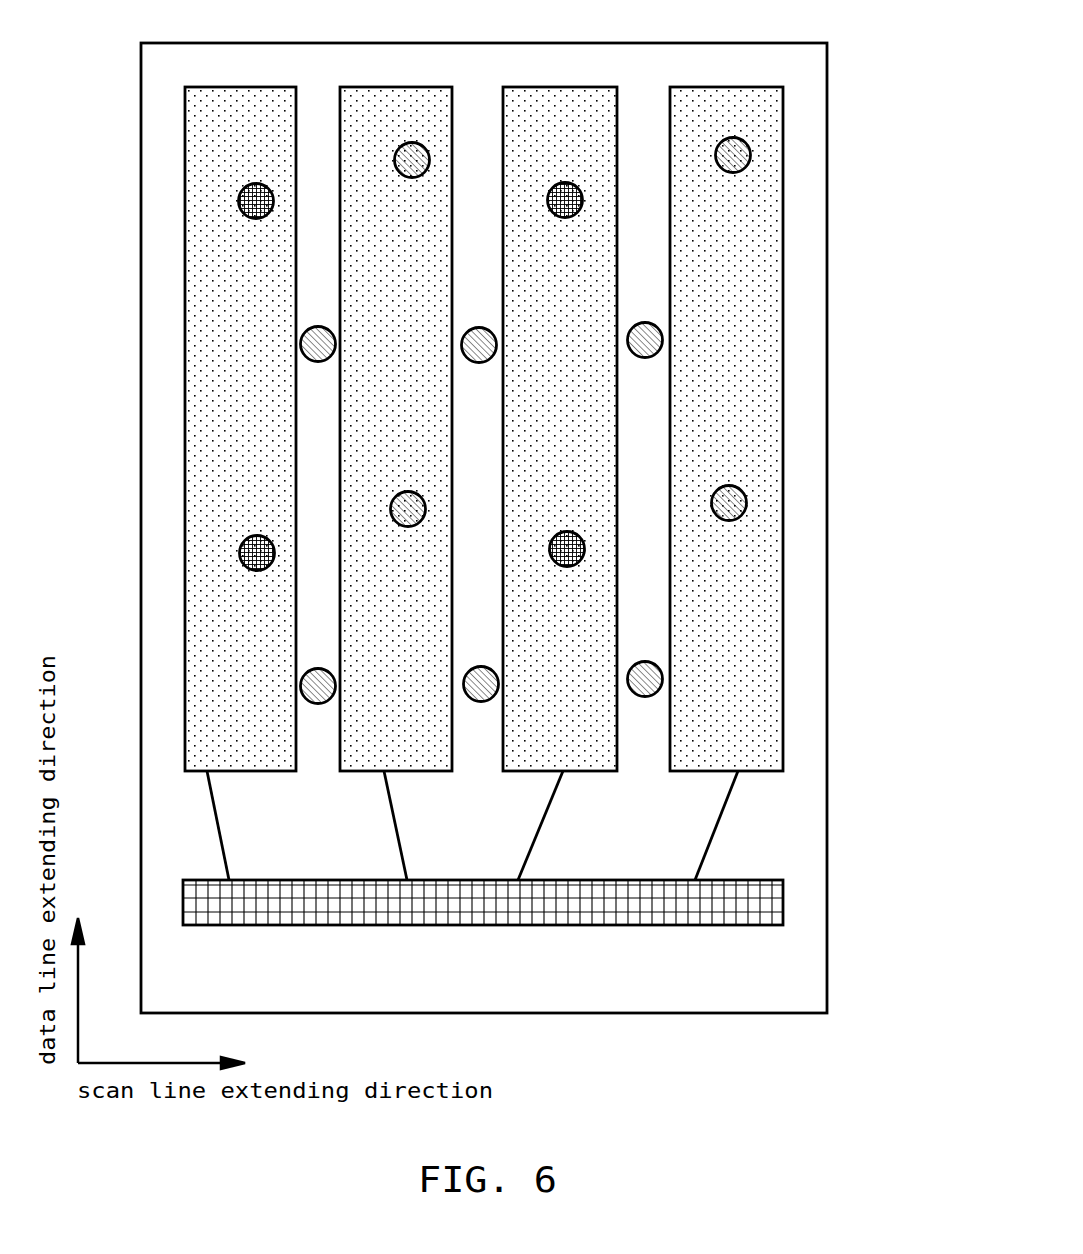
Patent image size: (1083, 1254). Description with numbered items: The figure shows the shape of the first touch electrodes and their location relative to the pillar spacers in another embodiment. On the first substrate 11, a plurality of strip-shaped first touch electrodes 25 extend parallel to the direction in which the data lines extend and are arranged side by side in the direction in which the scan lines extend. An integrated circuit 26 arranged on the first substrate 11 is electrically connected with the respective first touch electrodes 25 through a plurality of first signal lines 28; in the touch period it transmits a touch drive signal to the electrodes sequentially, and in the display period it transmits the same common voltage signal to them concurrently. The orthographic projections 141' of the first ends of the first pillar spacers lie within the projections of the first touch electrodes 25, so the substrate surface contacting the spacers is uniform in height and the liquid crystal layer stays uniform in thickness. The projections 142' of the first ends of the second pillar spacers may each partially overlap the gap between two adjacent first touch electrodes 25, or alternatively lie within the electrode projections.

The first substrate 11 is at (827, 52).
The first touch electrodes 25 is at (185, 703).
The first signal lines 28 is at (717, 828).
The integrated circuit 26 is at (717, 902).
The orthographic projections of the first ends of the first pillar spacers 141' is at (326, 345).
The projections of the first ends of the second pillar spacers 142' is at (609, 421).